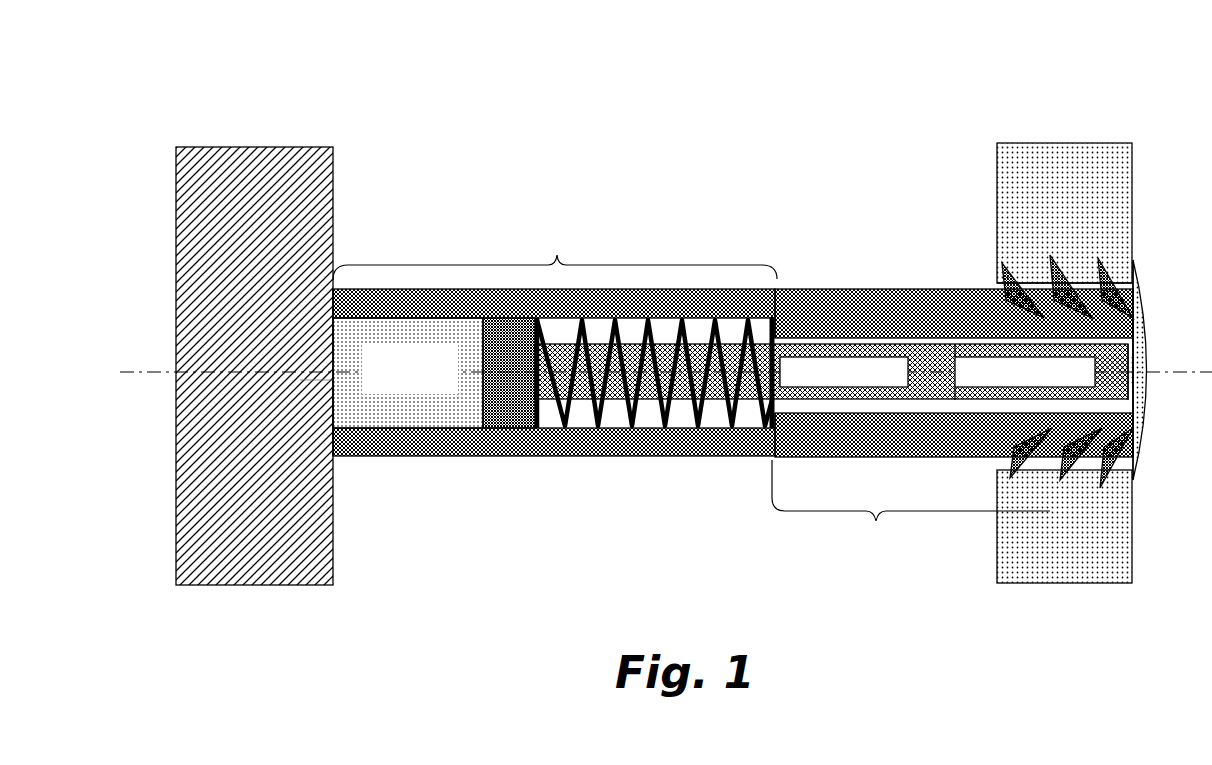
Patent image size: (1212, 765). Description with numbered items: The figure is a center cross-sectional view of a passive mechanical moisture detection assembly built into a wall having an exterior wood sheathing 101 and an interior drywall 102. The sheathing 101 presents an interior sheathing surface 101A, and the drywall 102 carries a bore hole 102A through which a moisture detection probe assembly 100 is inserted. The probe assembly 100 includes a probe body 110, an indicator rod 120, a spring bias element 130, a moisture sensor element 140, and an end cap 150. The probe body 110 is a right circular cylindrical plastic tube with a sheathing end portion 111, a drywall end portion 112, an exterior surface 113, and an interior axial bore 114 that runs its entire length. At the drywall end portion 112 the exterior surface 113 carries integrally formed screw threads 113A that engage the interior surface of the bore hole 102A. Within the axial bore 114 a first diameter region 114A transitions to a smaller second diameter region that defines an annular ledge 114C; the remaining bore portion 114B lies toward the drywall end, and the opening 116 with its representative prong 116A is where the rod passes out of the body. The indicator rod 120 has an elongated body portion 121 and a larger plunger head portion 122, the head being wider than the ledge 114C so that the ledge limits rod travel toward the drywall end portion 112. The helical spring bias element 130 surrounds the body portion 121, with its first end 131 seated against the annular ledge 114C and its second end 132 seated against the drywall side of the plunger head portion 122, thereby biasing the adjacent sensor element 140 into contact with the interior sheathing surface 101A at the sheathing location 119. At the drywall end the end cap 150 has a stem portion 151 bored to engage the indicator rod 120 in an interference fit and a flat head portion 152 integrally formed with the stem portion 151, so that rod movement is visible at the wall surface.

The moisture detection probe assembly 100 is at (703, 135).
The exterior wood sheathing 101 is at (225, 147).
The interior sheathing surface 101A is at (333, 337).
The interior drywall 102 is at (1030, 142).
The bore hole 102A is at (1115, 283).
The probe body 110 is at (695, 290).
The sheathing end portion 111 is at (425, 210).
The drywall end portion 112 is at (960, 195).
The exterior surface 113 is at (800, 290).
The screw threads 113A is at (1000, 290).
The axial bore 114 is at (548, 290).
The first diameter region 114A is at (555, 254).
The second housing portion 114B is at (911, 503).
The second diameter region / annular ledge 114C is at (768, 460).
The opening 116 is at (1172, 370).
The prong 116A is at (1170, 370).
The sheathing opening 119 is at (310, 384).
The indicator rod 120 is at (843, 457).
The elongated body portion 121 is at (1133, 318).
The plunger head portion 122 is at (508, 457).
The spring bias element 130 is at (628, 457).
The first end 131 is at (735, 457).
The second end 132 is at (543, 457).
The moisture sensor element 140 is at (372, 408).
The end cap 150 is at (990, 457).
The stem portion 151 is at (962, 457).
The flat head portion 152 is at (1148, 435).